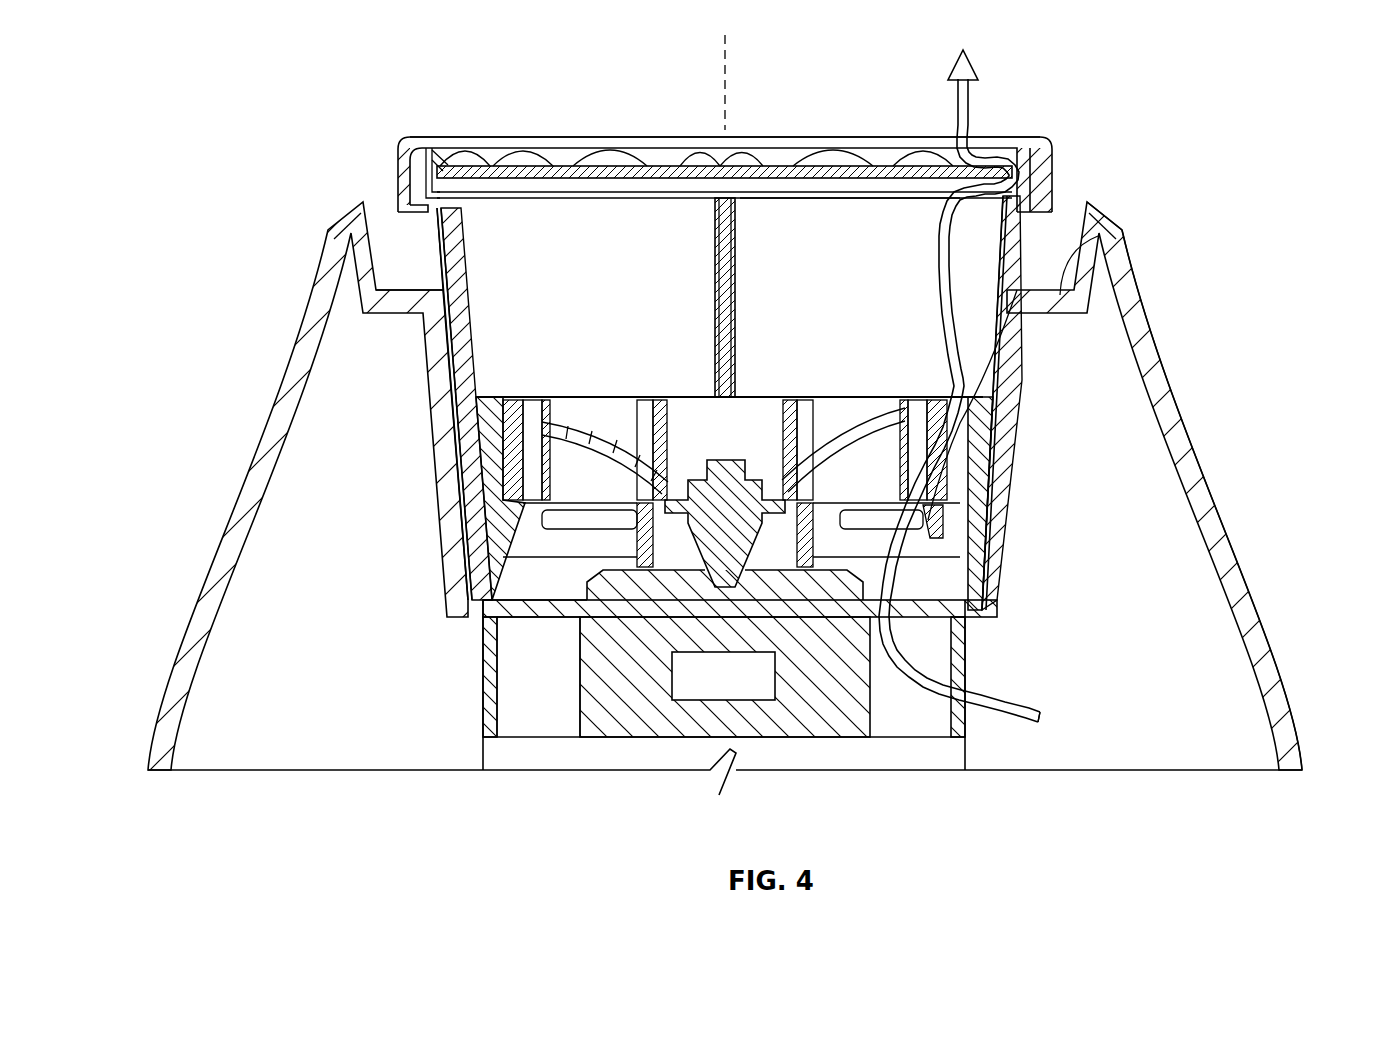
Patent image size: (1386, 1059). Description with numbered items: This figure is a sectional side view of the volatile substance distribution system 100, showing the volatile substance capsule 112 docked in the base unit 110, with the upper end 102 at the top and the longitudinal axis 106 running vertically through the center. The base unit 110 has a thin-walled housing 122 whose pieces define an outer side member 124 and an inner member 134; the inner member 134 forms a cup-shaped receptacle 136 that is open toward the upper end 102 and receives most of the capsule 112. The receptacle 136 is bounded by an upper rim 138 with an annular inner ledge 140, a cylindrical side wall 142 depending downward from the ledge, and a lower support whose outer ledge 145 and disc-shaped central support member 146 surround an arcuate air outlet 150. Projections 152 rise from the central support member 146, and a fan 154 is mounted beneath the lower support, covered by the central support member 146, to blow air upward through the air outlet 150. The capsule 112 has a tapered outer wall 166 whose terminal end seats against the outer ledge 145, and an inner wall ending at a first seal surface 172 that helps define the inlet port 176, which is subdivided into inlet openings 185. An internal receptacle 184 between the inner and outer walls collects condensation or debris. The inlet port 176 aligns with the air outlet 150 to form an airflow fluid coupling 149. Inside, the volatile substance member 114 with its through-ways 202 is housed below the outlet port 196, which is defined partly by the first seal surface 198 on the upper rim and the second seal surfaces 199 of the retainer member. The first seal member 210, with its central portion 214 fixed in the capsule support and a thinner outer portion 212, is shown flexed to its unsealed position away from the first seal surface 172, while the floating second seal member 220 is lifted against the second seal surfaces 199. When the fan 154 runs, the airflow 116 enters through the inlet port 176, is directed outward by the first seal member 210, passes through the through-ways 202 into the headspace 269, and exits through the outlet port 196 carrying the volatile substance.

The volatile substance distribution system 100 is at (232, 100).
The upper end 102 is at (1075, 155).
The longitudinal axis 106 is at (720, 108).
The base unit 110 is at (230, 488).
The volatile substance capsule 112 is at (400, 133).
The volatile substance member 114 is at (745, 293).
The airflow 116 is at (975, 100).
The housing 122 is at (1218, 522).
The outer side member 124 is at (1270, 655).
The inner member 134 is at (440, 455).
The receptacle 136 is at (390, 240).
The upper rim 138 is at (1082, 215).
The inner ledge 140 is at (1108, 237).
The side wall 142 is at (1017, 343).
The outer ledge 145 is at (985, 580).
The central support member 146 is at (830, 708).
The airflow fluid coupling 149 is at (483, 600).
The air outlet 150 is at (497, 705).
The projections 152 is at (517, 586).
The fan 154 is at (672, 690).
The outer wall 166 is at (985, 485).
The first seal surface 172 is at (975, 422).
The inlet port 176 is at (565, 583).
The internal receptacle 184 is at (975, 547).
The inlet openings 185 is at (917, 585).
The outlet port 196 is at (435, 148).
The first seal surface 198 is at (445, 178).
The second seal surfaces 199 is at (560, 180).
The through-ways 202 is at (565, 378).
The first seal member 210 is at (603, 433).
The outer portion 212 is at (868, 425).
The central portion 214 is at (742, 492).
The second seal member 220 is at (833, 160).
The headspace 269 is at (755, 212).